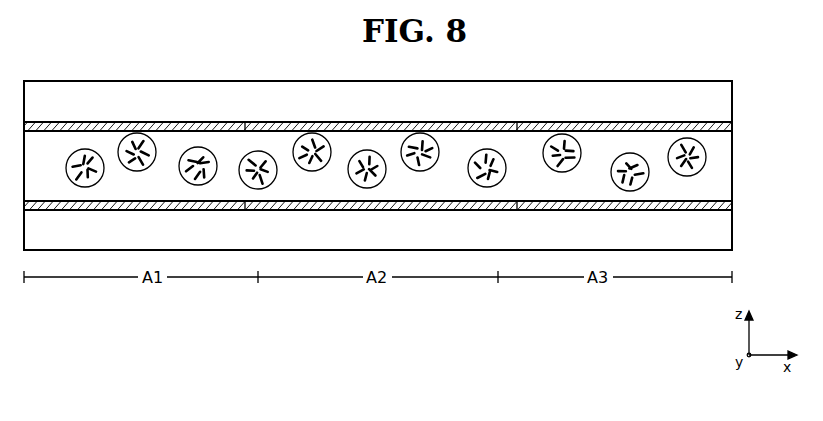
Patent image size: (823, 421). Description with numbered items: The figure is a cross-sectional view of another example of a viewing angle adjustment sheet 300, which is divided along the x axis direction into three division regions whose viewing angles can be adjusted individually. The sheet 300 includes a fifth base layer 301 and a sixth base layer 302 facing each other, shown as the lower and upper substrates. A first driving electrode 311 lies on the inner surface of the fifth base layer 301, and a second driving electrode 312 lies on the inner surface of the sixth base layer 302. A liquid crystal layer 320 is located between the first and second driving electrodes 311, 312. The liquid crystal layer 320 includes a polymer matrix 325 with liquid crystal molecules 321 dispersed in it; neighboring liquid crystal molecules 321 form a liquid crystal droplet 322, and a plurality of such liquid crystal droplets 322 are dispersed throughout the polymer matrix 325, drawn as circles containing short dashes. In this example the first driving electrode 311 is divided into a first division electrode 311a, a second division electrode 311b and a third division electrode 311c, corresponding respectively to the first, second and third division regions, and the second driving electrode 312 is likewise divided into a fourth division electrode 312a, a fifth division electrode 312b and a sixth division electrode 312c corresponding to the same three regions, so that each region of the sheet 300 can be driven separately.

The viewing angle adjustment sheet 300 is at (462, 383).
The fifth base layer 301 is at (727, 235).
The sixth base layer 302 is at (727, 103).
The first driving electrode 311 is at (733, 205).
The first division electrode 311a is at (200, 211).
The second division electrode 311b is at (430, 211).
The third division electrode 311c is at (688, 211).
The second driving electrode 312 is at (733, 126).
The fourth division electrode 312a is at (203, 121).
The fifth division electrode 312b is at (430, 121).
The sixth division electrode 312c is at (636, 121).
The liquid crystal layer 320 is at (727, 186).
The liquid crystal molecules 321 is at (700, 143).
The liquid crystal droplet 322 is at (705, 158).
The polymer matrix 325 is at (536, 150).